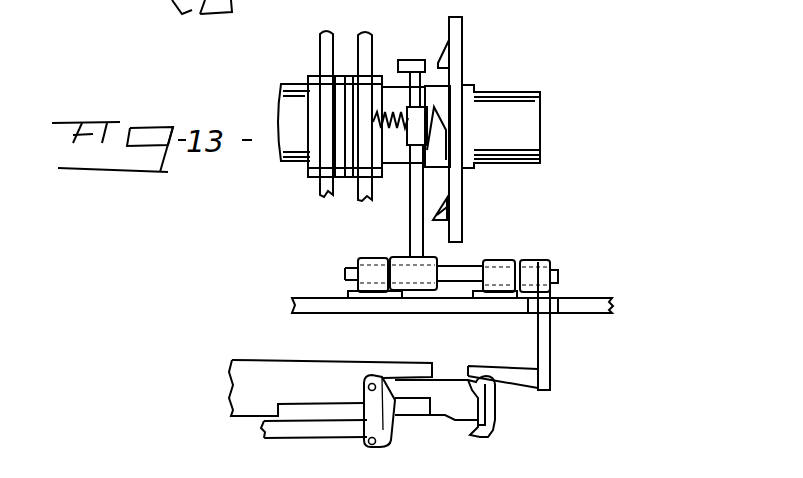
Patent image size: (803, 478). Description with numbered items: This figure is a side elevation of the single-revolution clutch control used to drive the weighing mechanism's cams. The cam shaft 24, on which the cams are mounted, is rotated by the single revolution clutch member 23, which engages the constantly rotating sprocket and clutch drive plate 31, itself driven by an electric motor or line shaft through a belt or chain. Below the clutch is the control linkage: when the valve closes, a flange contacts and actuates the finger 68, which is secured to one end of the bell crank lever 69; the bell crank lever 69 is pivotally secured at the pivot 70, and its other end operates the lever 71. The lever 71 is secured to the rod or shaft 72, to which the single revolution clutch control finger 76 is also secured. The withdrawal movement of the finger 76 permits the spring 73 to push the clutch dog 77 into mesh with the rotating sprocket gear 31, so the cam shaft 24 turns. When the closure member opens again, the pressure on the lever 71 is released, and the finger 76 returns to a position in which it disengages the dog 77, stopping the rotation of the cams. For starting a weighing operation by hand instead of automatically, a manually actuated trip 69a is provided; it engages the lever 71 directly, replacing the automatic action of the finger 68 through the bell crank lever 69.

The single revolution clutch member 23 is at (411, 60).
The cam shaft 24 is at (287, 88).
The sprocket and clutch drive plate 31 is at (458, 60).
The finger 68 is at (291, 431).
The bell crank lever 69 is at (384, 432).
The manually actuated trip 69a is at (496, 425).
The pivot 70 is at (371, 382).
The lever 71 is at (484, 368).
The rod or shaft 72 is at (471, 266).
The spring 73 is at (392, 150).
The single revolution clutch control finger 76 is at (410, 225).
The clutch dog 77 is at (417, 120).